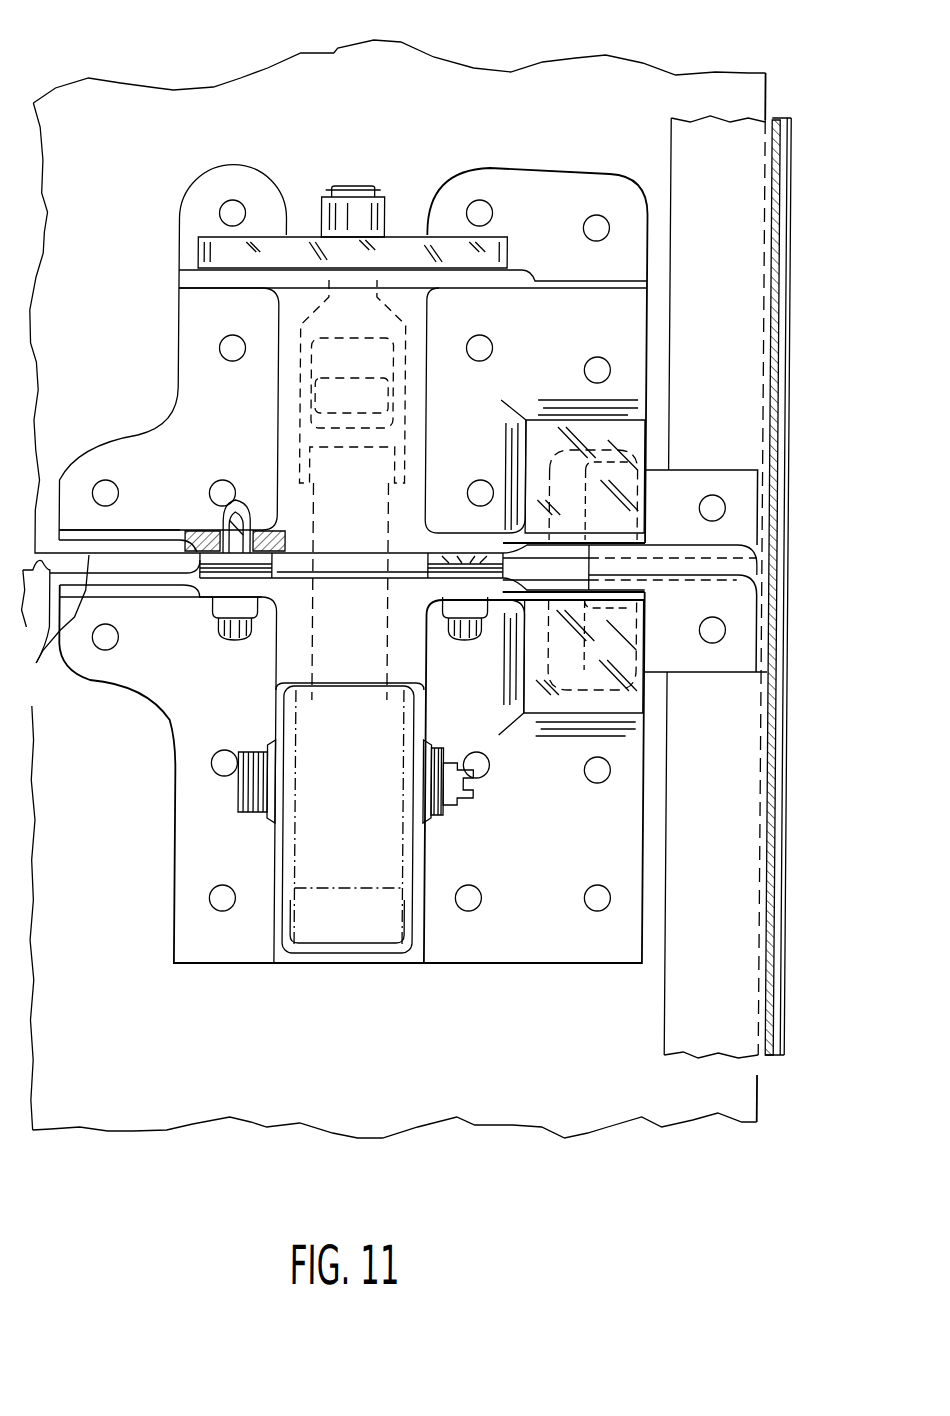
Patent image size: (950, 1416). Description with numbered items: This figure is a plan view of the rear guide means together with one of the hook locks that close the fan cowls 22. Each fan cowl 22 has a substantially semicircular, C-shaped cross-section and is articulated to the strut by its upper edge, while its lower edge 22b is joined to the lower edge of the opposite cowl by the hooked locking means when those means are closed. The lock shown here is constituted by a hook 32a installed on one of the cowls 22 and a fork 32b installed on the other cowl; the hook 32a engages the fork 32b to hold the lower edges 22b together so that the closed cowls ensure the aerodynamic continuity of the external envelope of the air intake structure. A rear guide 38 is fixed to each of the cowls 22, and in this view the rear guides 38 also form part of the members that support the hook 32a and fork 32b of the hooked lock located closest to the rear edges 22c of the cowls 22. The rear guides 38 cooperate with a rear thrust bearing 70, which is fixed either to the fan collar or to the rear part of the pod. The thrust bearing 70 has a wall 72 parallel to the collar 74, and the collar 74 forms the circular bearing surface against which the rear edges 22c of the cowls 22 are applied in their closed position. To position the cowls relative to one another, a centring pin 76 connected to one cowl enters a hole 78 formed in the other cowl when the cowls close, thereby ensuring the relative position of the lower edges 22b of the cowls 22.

The fan cowl 22 is at (768, 83).
The lower edge of cowl 22b is at (51, 626).
The rear edge of cowl 22c is at (767, 105).
The hook 32a is at (358, 380).
The fork 32b is at (366, 454).
The rear guide 38 is at (660, 340).
The rear thrust bearing 70 is at (719, 470).
The wall 72 is at (722, 658).
The collar 74 is at (725, 960).
The centring pin 76 is at (245, 513).
The hole 78 is at (228, 520).